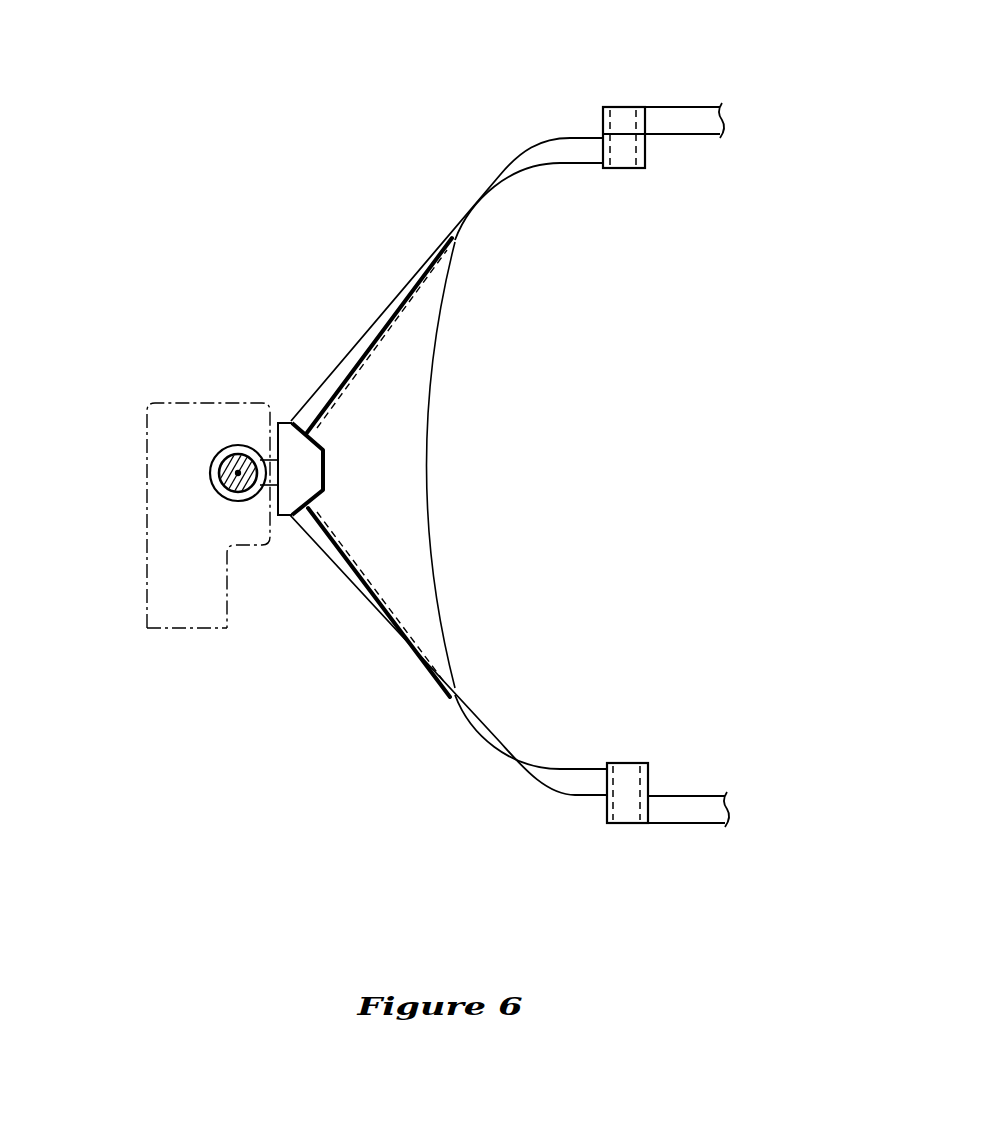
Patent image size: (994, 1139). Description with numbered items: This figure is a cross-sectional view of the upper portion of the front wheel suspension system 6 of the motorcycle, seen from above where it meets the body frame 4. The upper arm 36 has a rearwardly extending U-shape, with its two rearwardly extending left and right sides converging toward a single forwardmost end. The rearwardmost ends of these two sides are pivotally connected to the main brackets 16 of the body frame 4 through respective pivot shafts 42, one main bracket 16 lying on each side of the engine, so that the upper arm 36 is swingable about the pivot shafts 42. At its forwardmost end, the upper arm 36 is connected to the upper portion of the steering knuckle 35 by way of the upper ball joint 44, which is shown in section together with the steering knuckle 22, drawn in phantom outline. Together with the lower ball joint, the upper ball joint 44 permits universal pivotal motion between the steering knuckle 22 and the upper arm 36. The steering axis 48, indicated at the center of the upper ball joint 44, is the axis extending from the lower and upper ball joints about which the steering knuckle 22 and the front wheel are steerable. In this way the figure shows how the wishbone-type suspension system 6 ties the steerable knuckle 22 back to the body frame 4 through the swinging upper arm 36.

The body frame 4 is at (688, 106).
The front wheel suspension system 6 is at (310, 210).
The main bracket 16 is at (657, 117).
The steering knuckle 22 is at (145, 467).
The upper portion of the steering knuckle 35 is at (215, 415).
The upper arm 36 is at (488, 178).
The pivot shaft 42 is at (597, 122).
The upper ball joint 44 is at (245, 507).
The steering axis 48 is at (238, 473).